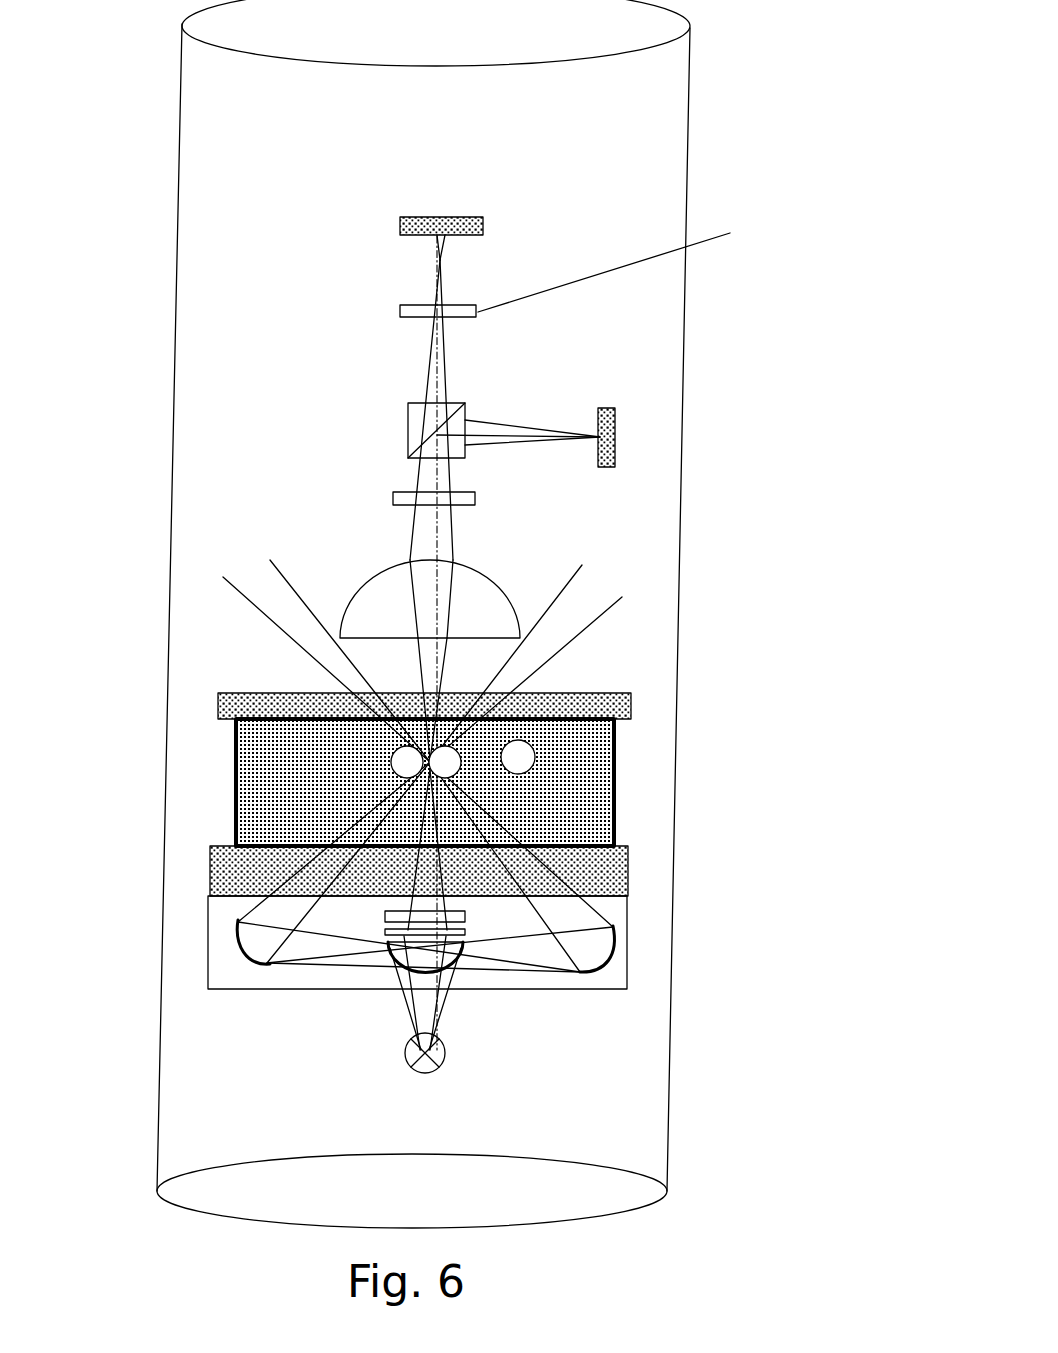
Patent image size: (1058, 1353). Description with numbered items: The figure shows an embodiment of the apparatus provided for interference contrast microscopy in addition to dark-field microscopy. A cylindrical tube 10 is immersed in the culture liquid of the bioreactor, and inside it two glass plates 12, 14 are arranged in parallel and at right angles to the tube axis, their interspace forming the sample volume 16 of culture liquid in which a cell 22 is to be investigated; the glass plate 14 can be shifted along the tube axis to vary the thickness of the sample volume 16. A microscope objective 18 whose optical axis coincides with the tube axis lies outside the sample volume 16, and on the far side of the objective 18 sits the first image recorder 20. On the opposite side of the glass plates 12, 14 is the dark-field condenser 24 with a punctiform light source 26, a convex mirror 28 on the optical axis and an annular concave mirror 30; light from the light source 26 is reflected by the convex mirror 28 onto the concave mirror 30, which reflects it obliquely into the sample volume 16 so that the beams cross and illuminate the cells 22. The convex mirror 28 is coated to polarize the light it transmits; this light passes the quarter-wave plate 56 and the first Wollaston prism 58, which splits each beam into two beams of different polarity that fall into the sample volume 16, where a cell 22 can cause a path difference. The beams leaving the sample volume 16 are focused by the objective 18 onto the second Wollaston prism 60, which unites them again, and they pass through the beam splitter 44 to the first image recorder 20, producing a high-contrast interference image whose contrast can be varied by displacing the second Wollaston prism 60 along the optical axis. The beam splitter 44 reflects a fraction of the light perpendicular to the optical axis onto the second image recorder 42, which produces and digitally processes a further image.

The cylindrical tube 10 is at (686, 131).
The glass plate 12 is at (631, 710).
The glass plate 14 is at (628, 875).
The sample volume 16 is at (583, 743).
The microscope objective 18 is at (487, 607).
The first image recorder 20 is at (483, 226).
The cell 22 is at (463, 768).
The dark-field condenser 24 is at (206, 933).
The light source 26 is at (445, 1058).
The convex mirror 28 is at (450, 946).
The concave mirror 30 is at (610, 950).
The second image recorder 42 is at (615, 425).
The beam splitter 44 is at (408, 423).
The λ/4 plate 56 is at (463, 944).
The first Wollaston prism 58 is at (465, 913).
The second Wollaston prism 60 is at (475, 498).